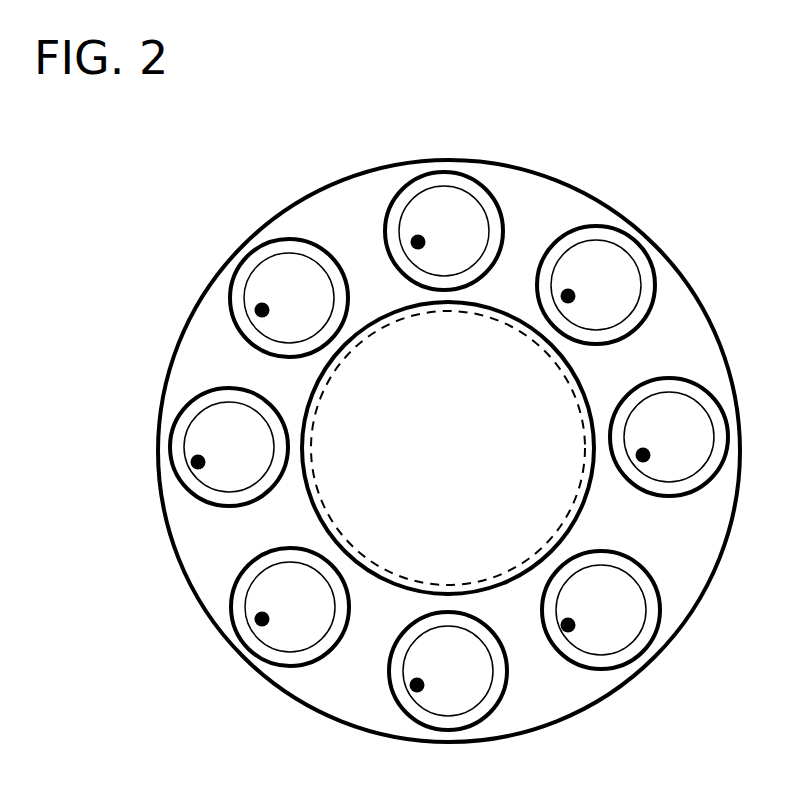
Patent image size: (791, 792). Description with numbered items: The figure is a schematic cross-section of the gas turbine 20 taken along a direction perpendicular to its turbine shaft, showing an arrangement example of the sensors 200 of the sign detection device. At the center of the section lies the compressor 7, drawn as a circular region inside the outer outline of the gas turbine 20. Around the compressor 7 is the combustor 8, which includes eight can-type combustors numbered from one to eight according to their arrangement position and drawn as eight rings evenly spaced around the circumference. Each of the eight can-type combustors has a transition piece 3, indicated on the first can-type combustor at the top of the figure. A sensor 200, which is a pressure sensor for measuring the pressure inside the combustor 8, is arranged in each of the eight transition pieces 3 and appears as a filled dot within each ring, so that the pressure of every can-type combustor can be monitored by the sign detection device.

The gas turbine 20 is at (689, 95).
The combustor 8 is at (688, 243).
The compressor 7 is at (592, 398).
The transition piece 3 is at (485, 192).
The sensor 200 is at (257, 309).